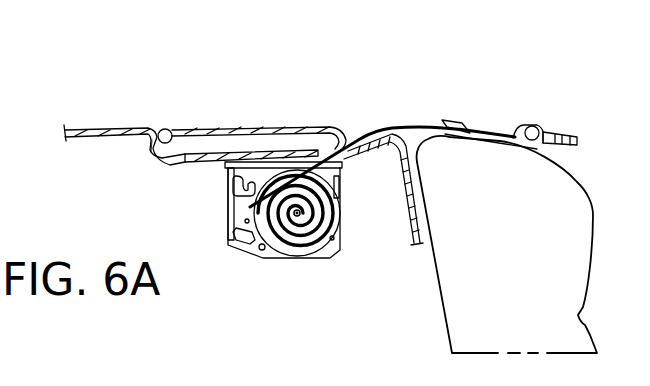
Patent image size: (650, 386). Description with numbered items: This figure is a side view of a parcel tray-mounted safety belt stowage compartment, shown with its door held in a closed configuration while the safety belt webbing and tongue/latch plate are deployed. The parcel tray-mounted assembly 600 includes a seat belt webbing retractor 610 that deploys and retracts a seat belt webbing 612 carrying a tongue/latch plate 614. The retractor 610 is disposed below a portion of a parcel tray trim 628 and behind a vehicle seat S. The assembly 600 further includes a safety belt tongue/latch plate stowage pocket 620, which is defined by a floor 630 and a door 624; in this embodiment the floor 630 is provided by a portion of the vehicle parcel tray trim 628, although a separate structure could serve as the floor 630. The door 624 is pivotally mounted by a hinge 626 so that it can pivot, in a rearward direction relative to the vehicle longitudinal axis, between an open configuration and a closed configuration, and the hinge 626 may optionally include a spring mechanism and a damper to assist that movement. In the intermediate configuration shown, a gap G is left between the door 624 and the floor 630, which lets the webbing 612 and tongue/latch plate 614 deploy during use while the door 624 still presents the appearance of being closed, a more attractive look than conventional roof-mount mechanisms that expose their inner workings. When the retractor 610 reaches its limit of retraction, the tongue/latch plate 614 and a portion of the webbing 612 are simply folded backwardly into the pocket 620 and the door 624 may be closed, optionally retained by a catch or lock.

The parcel tray-mounted assembly 600 is at (392, 92).
The seat belt webbing retractor 610 is at (304, 259).
The seat belt webbing 612 is at (410, 127).
The tongue/latch plate 614 is at (549, 132).
The safety belt tongue/latch plate stowage pocket 620 is at (234, 122).
The door 624 is at (260, 126).
The hinge 626 is at (160, 129).
The parcel tray trim 628 is at (79, 128).
The floor 630 is at (200, 165).
The gap G is at (358, 130).
The vehicle seat S is at (507, 243).